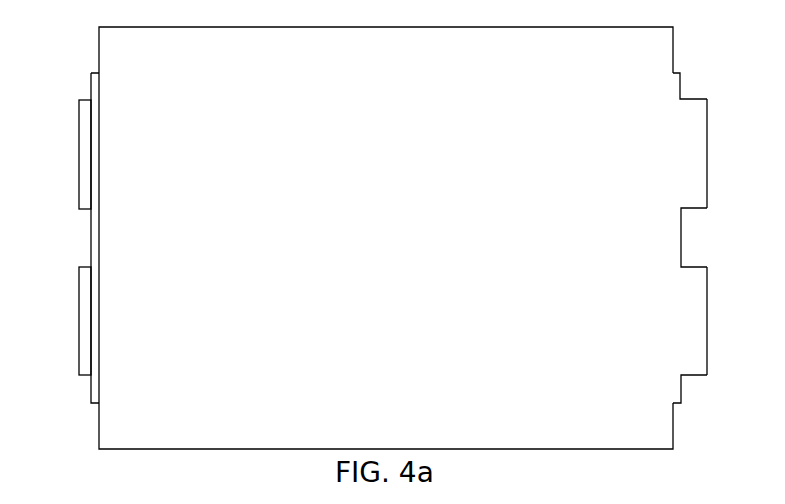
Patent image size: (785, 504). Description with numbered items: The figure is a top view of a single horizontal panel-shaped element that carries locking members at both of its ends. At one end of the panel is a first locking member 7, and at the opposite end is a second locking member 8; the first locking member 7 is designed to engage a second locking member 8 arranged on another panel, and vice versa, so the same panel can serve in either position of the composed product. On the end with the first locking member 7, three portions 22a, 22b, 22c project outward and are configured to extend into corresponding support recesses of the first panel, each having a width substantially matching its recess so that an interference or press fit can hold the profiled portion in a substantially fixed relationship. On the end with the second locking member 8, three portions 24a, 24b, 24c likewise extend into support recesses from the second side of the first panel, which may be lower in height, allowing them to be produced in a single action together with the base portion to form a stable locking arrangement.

The first locking member 7 is at (700, 333).
The second locking member 8 is at (83, 313).
The portion of the first profiled portion 22a is at (675, 87).
The portion of the first profiled portion 22b is at (675, 222).
The portion of the first profiled portion 22c is at (675, 388).
The portion of the second profiled portion 24a is at (92, 78).
The portion of the second profiled portion 24b is at (92, 237).
The portion of the second profiled portion 24c is at (92, 390).